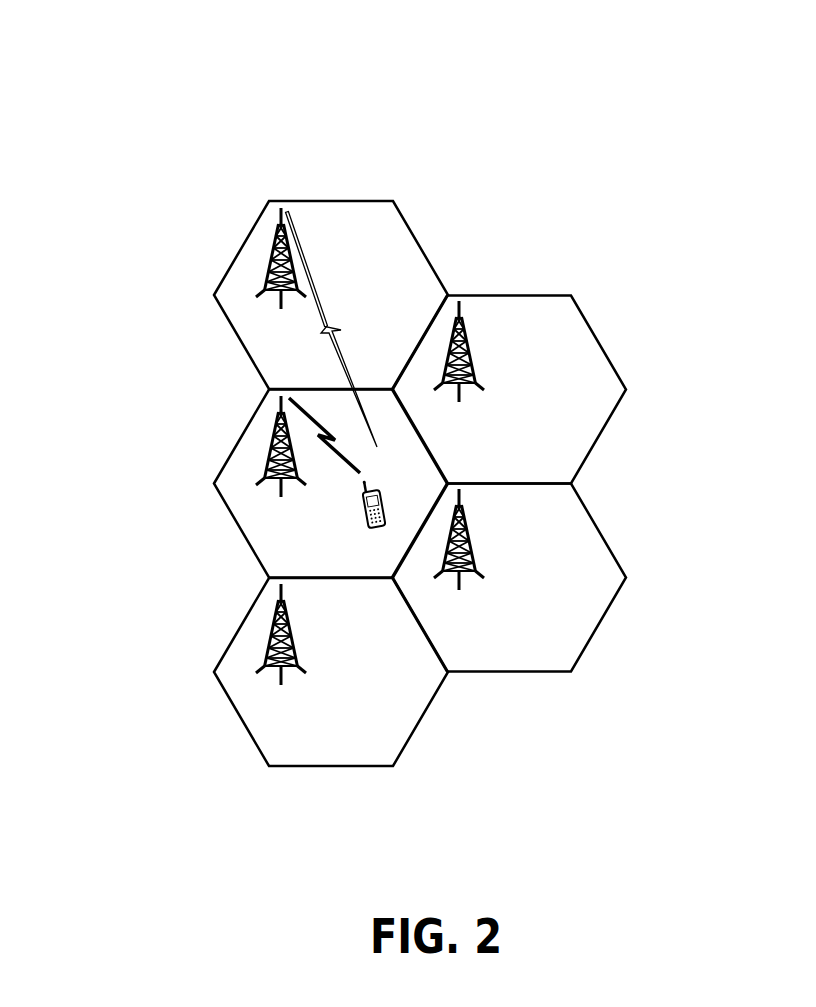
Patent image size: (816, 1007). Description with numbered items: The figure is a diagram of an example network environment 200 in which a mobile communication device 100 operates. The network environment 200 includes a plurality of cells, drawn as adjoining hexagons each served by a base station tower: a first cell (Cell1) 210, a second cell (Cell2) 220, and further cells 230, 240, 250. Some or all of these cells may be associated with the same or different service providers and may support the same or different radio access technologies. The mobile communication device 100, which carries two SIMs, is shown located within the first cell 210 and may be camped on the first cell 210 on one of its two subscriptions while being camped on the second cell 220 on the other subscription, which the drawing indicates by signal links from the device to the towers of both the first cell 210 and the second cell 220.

The network environment 200 is at (107, 63).
The mobile communication device 100 is at (363, 505).
The first cell (Cell1) 210 is at (257, 553).
The second cell (Cell2) 220 is at (435, 270).
The cell 230 is at (615, 363).
The cell 240 is at (613, 553).
The cell 250 is at (435, 707).